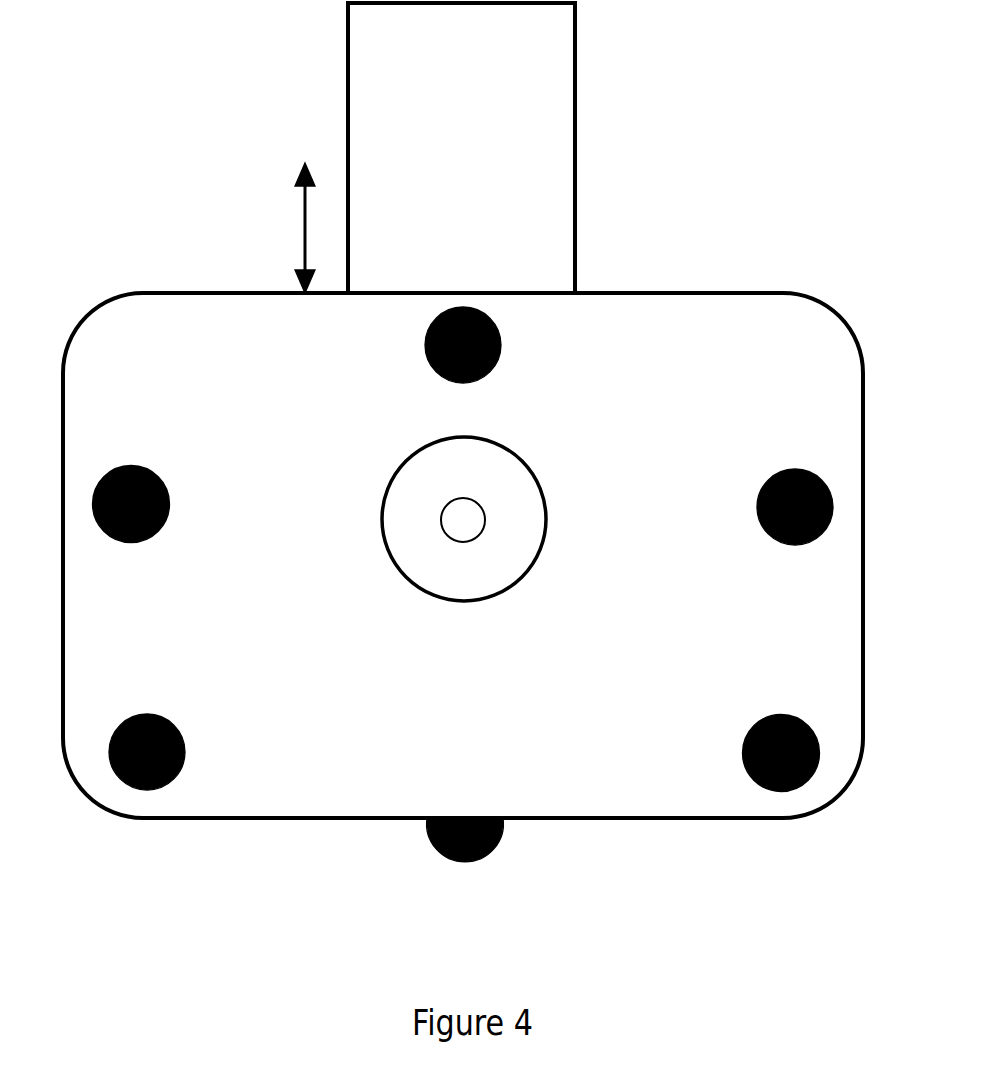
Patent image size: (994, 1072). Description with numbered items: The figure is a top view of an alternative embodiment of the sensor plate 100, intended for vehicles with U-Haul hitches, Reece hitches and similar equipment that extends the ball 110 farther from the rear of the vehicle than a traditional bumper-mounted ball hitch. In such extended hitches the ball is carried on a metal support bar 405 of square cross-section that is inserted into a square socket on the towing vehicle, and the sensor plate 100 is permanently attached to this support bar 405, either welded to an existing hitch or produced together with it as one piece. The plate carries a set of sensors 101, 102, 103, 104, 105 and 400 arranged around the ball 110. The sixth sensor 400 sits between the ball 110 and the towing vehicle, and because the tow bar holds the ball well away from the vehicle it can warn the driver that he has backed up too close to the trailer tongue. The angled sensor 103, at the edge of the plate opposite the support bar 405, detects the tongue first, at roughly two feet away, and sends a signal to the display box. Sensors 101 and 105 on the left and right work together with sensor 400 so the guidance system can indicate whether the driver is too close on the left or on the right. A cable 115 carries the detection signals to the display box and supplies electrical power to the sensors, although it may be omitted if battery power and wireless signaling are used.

The sensor plate 100 is at (177, 380).
The sensor 101 is at (172, 500).
The sensor 102 is at (115, 774).
The angled sensor 103 is at (428, 823).
The sensor 104 is at (820, 770).
The sensor 105 is at (836, 497).
The ball 110 is at (478, 582).
The cable 115 is at (303, 207).
The sixth sensor 400 is at (498, 357).
The support bar 405 is at (522, 116).